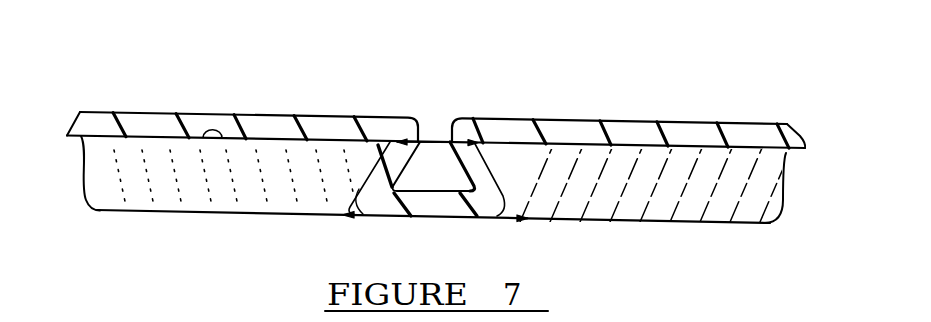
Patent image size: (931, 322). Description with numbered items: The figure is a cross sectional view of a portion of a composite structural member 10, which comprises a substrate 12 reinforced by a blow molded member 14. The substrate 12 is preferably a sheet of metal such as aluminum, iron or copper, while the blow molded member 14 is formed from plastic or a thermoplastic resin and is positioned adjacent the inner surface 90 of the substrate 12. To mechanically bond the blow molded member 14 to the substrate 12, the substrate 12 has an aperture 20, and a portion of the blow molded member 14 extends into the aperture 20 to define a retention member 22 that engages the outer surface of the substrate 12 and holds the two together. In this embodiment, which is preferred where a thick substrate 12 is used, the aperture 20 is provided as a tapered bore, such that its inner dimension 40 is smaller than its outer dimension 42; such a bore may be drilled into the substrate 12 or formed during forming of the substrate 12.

The composite structural member 10 is at (258, 85).
The substrate 12 is at (727, 168).
The blow molded member 14 is at (620, 131).
The aperture 20 is at (313, 216).
The retention member 22 is at (462, 228).
The inner dimension 40 is at (437, 141).
The outer dimension 42 is at (365, 219).
The inner surface 90 is at (203, 137).